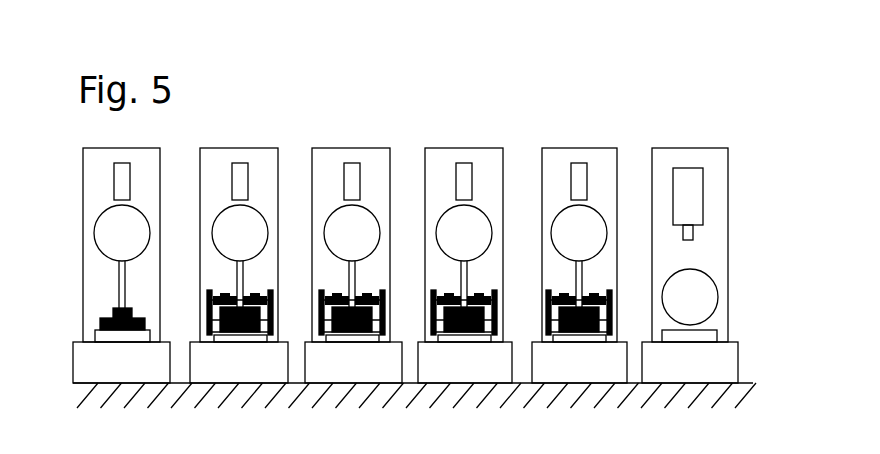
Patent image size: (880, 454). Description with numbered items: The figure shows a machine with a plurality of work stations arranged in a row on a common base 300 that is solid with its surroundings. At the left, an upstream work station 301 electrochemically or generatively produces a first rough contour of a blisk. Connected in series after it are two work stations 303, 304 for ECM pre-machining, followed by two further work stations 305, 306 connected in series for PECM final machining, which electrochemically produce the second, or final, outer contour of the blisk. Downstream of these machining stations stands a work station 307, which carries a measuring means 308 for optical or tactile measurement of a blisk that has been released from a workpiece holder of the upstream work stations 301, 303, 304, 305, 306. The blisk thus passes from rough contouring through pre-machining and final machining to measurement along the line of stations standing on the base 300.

The base 300 is at (415, 433).
The upstream work station 301 is at (69, 159).
The work station 303 is at (196, 159).
The work station 304 is at (310, 158).
The work station 305 is at (420, 159).
The work station 306 is at (535, 159).
The work station 307 is at (644, 161).
The measuring means 308 is at (697, 187).